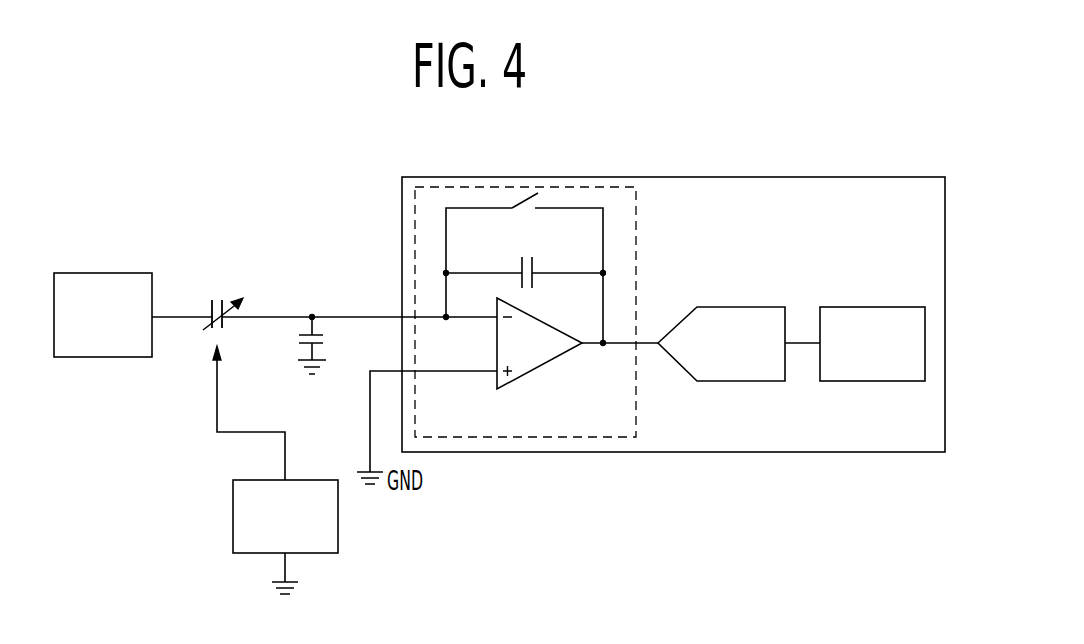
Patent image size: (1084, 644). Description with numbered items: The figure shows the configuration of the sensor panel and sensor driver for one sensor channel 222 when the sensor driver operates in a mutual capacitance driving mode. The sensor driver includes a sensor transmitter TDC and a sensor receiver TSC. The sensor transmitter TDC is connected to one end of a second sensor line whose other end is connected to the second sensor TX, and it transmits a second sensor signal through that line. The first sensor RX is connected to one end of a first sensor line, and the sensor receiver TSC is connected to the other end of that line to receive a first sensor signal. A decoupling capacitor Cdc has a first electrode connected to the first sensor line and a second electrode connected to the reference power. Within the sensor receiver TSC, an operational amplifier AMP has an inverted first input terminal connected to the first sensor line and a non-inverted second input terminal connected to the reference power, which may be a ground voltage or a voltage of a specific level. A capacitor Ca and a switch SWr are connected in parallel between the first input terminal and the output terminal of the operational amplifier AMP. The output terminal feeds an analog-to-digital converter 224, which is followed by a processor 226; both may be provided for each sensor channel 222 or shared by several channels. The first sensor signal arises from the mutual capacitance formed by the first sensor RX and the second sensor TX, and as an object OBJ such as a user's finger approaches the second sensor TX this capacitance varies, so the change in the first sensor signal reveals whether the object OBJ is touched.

The sensor channel 222 is at (636, 242).
The analog-to-digital converter 224 is at (740, 307).
The processor 226 is at (873, 307).
The sensor receiver TSC is at (795, 177).
The sensor transmitter TDC is at (103, 315).
The second sensor TX is at (210, 319).
The first sensor RX is at (224, 319).
The decoupling capacitor Cdc is at (332, 345).
The object OBJ is at (233, 507).
The operational amplifier AMP is at (528, 375).
The switch SWr is at (519, 218).
The capacitor Ca is at (525, 265).